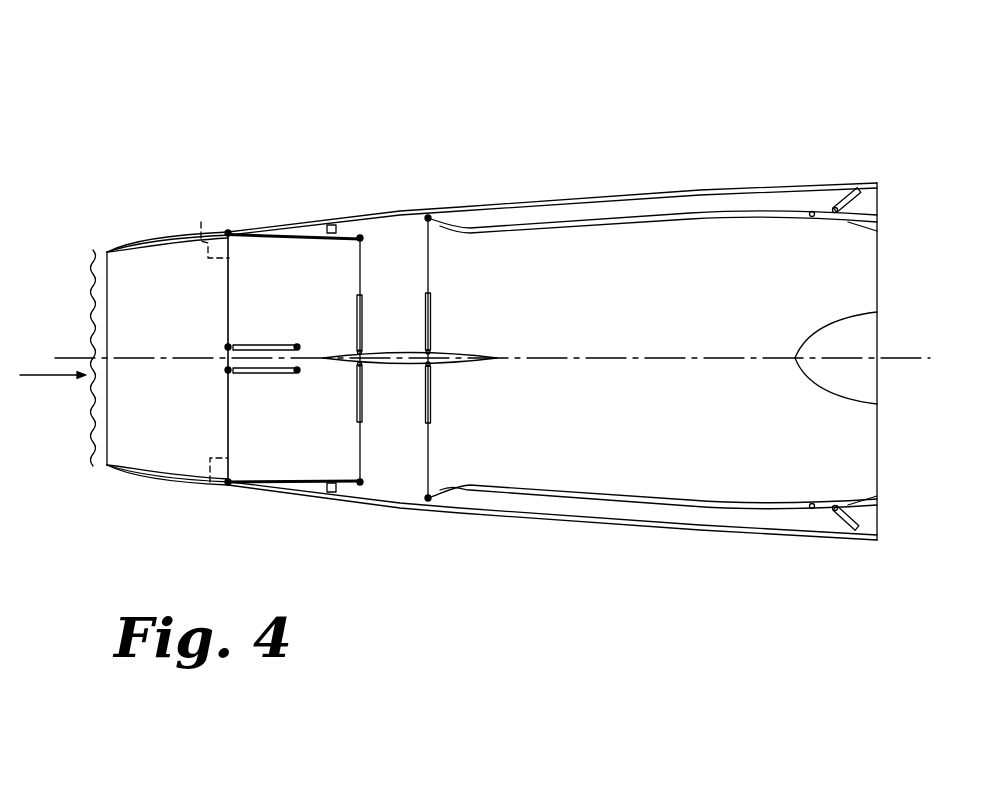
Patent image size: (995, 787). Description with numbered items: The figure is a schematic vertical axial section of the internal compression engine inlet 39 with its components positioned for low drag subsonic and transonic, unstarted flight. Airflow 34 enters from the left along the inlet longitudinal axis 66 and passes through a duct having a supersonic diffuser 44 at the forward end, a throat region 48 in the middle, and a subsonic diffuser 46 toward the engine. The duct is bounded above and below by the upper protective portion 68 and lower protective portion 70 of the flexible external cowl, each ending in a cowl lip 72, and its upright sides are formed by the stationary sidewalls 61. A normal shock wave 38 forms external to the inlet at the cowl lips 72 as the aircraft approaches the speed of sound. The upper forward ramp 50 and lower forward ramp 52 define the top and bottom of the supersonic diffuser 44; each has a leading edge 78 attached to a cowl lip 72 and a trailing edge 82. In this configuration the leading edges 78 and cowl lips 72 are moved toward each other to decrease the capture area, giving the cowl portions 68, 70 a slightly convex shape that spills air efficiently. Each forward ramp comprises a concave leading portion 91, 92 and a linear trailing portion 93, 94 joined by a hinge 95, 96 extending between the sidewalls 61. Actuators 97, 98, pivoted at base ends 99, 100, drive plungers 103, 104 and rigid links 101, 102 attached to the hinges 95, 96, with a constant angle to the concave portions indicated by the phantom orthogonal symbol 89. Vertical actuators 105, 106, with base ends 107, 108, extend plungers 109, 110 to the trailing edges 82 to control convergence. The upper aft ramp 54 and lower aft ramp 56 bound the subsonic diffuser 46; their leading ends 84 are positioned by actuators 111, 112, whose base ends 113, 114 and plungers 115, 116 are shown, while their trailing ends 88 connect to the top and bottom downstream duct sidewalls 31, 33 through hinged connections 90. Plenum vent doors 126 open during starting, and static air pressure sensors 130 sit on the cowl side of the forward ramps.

The top downstream duct sidewall 31 is at (857, 226).
The bottom downstream duct sidewall 33 is at (857, 497).
The airflow 34 is at (60, 377).
The normal shock wave 38 is at (93, 467).
The internal compression engine inlet 39 is at (427, 76).
The supersonic diffuser 44 is at (280, 397).
The subsonic diffuser 46 is at (633, 373).
The throat region 48 is at (421, 445).
The upper forward ramp 50 is at (250, 247).
The lower forward ramp 52 is at (189, 468).
The upper aft ramp 54 is at (573, 246).
The lower aft ramp 56 is at (663, 482).
The stationary sidewall 61 is at (128, 292).
The inlet longitudinal axis 66 is at (70, 353).
The upper protective portion 68 is at (660, 190).
The lower protective portion 70 is at (527, 205).
The cowl lip 72 is at (130, 244).
The leading edge 78 is at (110, 470).
The trailing edge 82 is at (360, 236).
The leading end 84 is at (428, 217).
The trailing end 88 is at (769, 216).
The orthogonal symbol 89 is at (201, 222).
The hinged connection 90 is at (812, 214).
The concave leading portion 91 is at (165, 238).
The concave leading portion 92 is at (154, 472).
The linear trailing portion 93 is at (274, 237).
The linear trailing portion 94 is at (281, 479).
The hinge 95 is at (228, 233).
The hinge 96 is at (228, 484).
The actuator 97 is at (266, 338).
The actuator 98 is at (266, 380).
The base end 99 is at (297, 347).
The base end 100 is at (297, 370).
The link 101 is at (229, 291).
The link 102 is at (229, 420).
The plunger 103 is at (228, 347).
The plunger 104 is at (228, 370).
The actuator 105 is at (372, 308).
The actuator 106 is at (372, 410).
The base end 107 is at (355, 351).
The base end 108 is at (355, 365).
The plunger 109 is at (361, 258).
The plunger 110 is at (361, 463).
The actuator 111 is at (446, 310).
The actuator 112 is at (446, 410).
The base end 113 is at (431, 349).
The base end 114 is at (431, 367).
The plunger 115 is at (430, 248).
The plunger 116 is at (430, 470).
The plenum vent door 126 is at (838, 192).
The static air pressure sensor 130 is at (334, 225).